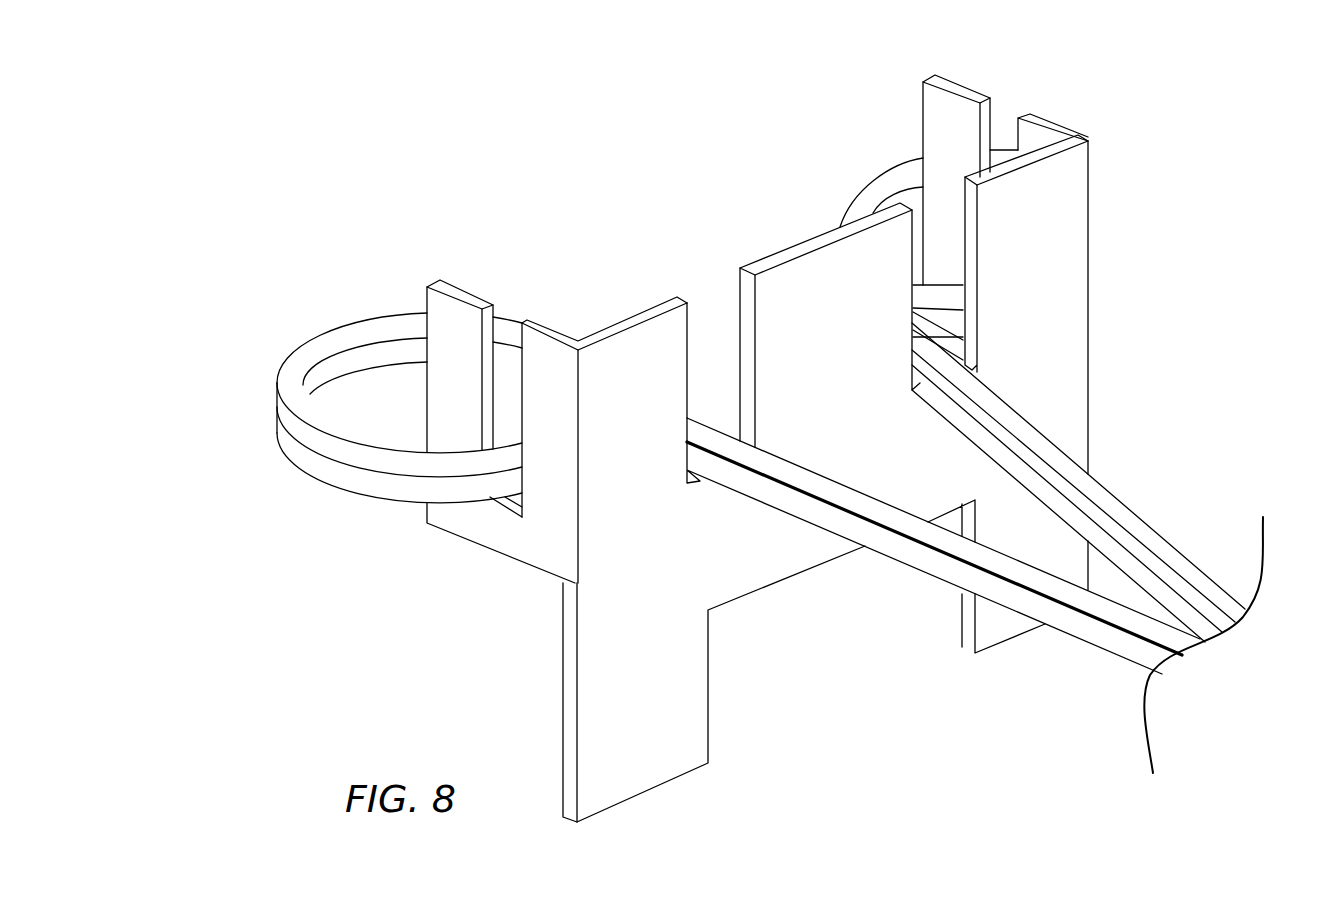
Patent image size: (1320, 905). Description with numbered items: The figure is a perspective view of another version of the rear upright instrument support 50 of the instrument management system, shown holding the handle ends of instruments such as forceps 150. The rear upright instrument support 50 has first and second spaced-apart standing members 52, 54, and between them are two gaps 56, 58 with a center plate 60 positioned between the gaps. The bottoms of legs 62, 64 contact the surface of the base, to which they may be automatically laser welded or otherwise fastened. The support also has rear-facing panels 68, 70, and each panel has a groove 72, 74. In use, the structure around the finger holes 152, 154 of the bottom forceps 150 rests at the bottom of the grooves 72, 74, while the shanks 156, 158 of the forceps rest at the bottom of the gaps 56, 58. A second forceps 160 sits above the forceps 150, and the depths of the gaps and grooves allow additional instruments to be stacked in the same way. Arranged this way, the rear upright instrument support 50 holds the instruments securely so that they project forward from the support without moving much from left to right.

The rear upright instrument support 50 is at (748, 568).
The first standing member 52 is at (1020, 155).
The second standing member 54 is at (643, 345).
The gap 56 is at (968, 248).
The gap 58 is at (748, 350).
The center plate 60 is at (763, 262).
The leg 62 is at (995, 632).
The leg 64 is at (650, 770).
The rear-facing panel 68 is at (943, 127).
The rear-facing panel 70 is at (457, 325).
The groove 72 is at (985, 116).
The groove 74 is at (490, 397).
The forceps 150 is at (1100, 530).
The finger hole 152 is at (946, 326).
The finger hole 154 is at (360, 478).
The shank 156 is at (1142, 568).
The shank 158 is at (1120, 640).
The forceps 160 is at (1040, 447).